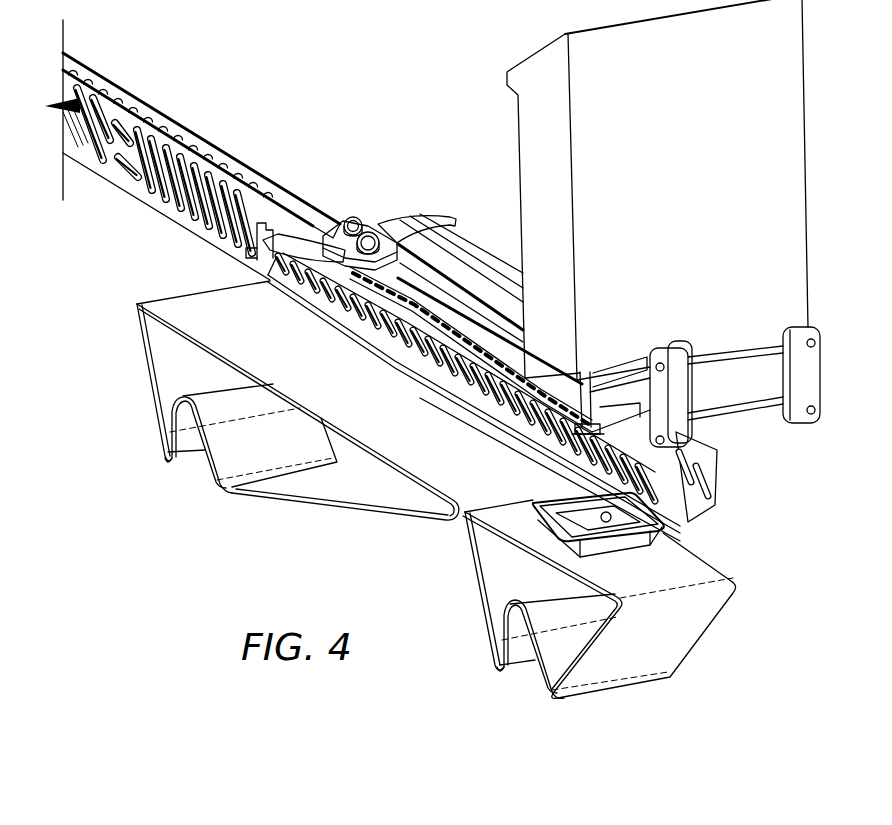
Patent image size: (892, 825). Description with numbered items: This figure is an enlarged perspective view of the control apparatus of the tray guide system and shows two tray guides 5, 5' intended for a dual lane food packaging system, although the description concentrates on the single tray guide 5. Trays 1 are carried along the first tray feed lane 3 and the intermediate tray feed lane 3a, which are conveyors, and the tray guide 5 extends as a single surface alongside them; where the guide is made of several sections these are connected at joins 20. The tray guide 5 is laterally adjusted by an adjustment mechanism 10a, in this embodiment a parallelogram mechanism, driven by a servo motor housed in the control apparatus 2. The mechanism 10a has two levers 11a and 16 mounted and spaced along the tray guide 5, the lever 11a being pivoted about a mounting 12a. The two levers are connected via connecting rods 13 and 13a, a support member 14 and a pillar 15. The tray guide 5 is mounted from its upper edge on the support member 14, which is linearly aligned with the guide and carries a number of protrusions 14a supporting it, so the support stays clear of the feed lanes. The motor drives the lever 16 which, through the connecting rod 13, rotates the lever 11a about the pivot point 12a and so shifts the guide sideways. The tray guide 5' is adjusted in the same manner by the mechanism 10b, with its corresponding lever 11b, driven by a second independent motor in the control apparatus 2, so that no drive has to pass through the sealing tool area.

The tray 1 is at (553, 530).
The control apparatus 2 is at (797, 130).
The first tray feed lane 3 is at (673, 573).
The intermediate tray feed lane 3a is at (453, 477).
The tray guide 5 is at (166, 150).
The tray guide 5' is at (201, 145).
The adjustment mechanism 10a is at (385, 334).
The mechanism 10b is at (471, 222).
The lever 11a is at (280, 258).
The second paddle arm 11b is at (428, 217).
The mounting 12a is at (372, 224).
The connecting rod 13 is at (347, 277).
The connecting rod 13a is at (575, 428).
The support member 14 is at (438, 307).
The protrusions 14a is at (433, 308).
The pillar 15 is at (693, 427).
The lever 16 is at (587, 407).
The joins 20 is at (246, 253).